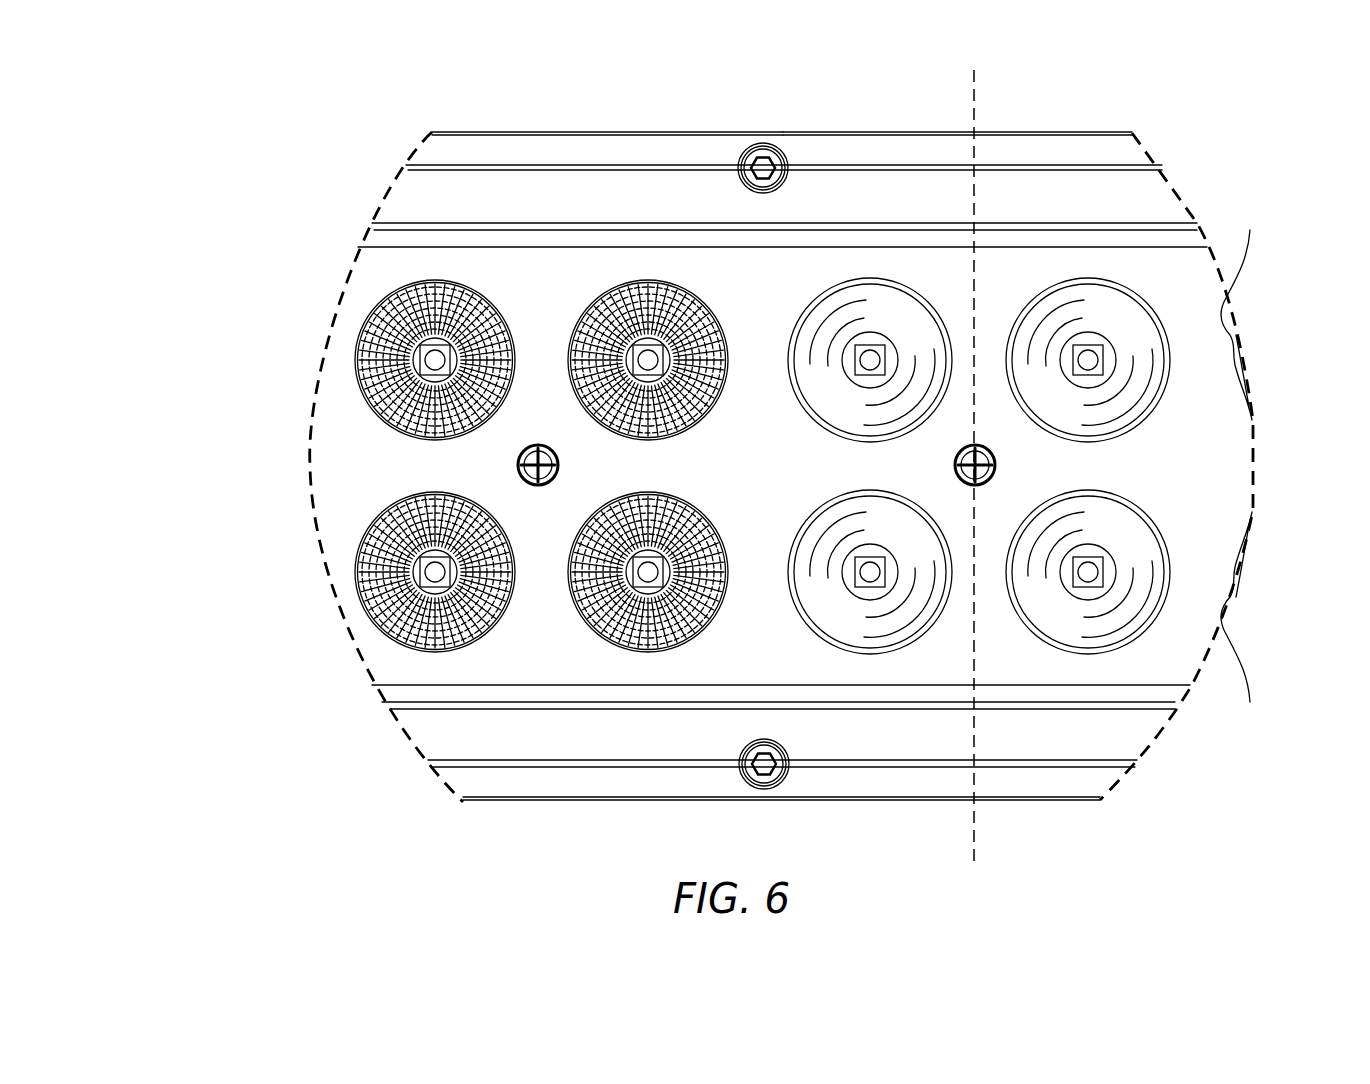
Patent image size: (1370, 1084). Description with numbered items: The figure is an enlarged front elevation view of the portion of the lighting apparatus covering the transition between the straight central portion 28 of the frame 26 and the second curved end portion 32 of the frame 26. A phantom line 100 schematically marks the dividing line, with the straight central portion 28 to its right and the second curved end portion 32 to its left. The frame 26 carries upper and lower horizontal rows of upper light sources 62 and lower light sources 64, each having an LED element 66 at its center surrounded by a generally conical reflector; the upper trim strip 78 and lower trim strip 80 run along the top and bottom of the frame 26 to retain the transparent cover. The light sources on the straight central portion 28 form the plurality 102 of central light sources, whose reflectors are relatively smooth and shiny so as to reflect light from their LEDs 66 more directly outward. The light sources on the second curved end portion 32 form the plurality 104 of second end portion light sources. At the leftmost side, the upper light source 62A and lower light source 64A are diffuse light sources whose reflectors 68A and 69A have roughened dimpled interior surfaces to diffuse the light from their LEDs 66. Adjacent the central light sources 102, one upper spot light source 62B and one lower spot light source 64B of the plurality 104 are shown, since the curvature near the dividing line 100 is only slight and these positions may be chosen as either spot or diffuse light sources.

The frame 26 is at (781, 464).
The second curved end portion 32 is at (463, 143).
The straight central portion 28 is at (1105, 145).
The upper trim strip 78 is at (918, 142).
The lower trim strip 80 is at (1082, 789).
The phantom line 100 is at (975, 850).
The upper light source 62 is at (572, 262).
The lower light source 64 is at (581, 667).
The plurality of second end portion light sources 104 is at (812, 302).
The plurality of central light sources 102 is at (1152, 318).
The upper light source 62A is at (353, 360).
The reflector 68A is at (357, 343).
The spot light source 62B is at (872, 280).
The lower light source 64A is at (362, 572).
The reflector 69A is at (357, 575).
The spot light source 64B is at (863, 654).
The LED element 66 is at (437, 366).